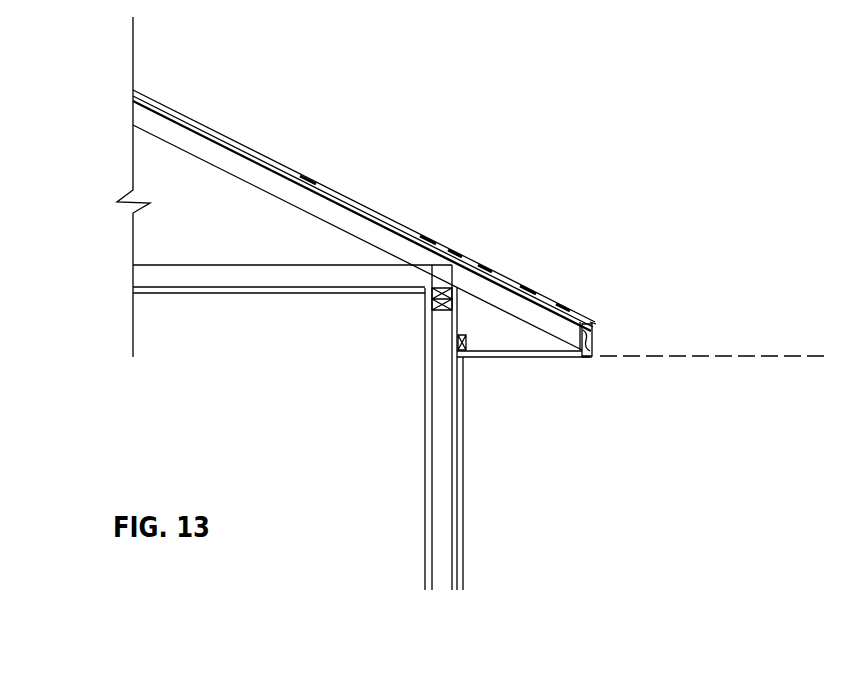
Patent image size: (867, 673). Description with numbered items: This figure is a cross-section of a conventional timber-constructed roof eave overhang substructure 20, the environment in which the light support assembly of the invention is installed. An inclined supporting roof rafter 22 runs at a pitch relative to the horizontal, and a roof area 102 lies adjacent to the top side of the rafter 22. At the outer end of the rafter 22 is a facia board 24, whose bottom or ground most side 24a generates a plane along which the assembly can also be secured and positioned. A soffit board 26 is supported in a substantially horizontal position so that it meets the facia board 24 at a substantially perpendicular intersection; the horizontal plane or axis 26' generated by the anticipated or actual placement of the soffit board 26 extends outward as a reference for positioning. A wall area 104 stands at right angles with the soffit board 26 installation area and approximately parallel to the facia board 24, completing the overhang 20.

The roof eave overhang substructure 20 is at (603, 585).
The supporting roof rafter 22 is at (160, 130).
The facia board 24 is at (593, 342).
The bottom or ground most side of the facia board 24a is at (586, 362).
The soffit board 26 is at (523, 380).
The horizontal plane or axis 26' is at (720, 396).
The roof area 102 is at (330, 190).
The wall area 104 is at (463, 440).